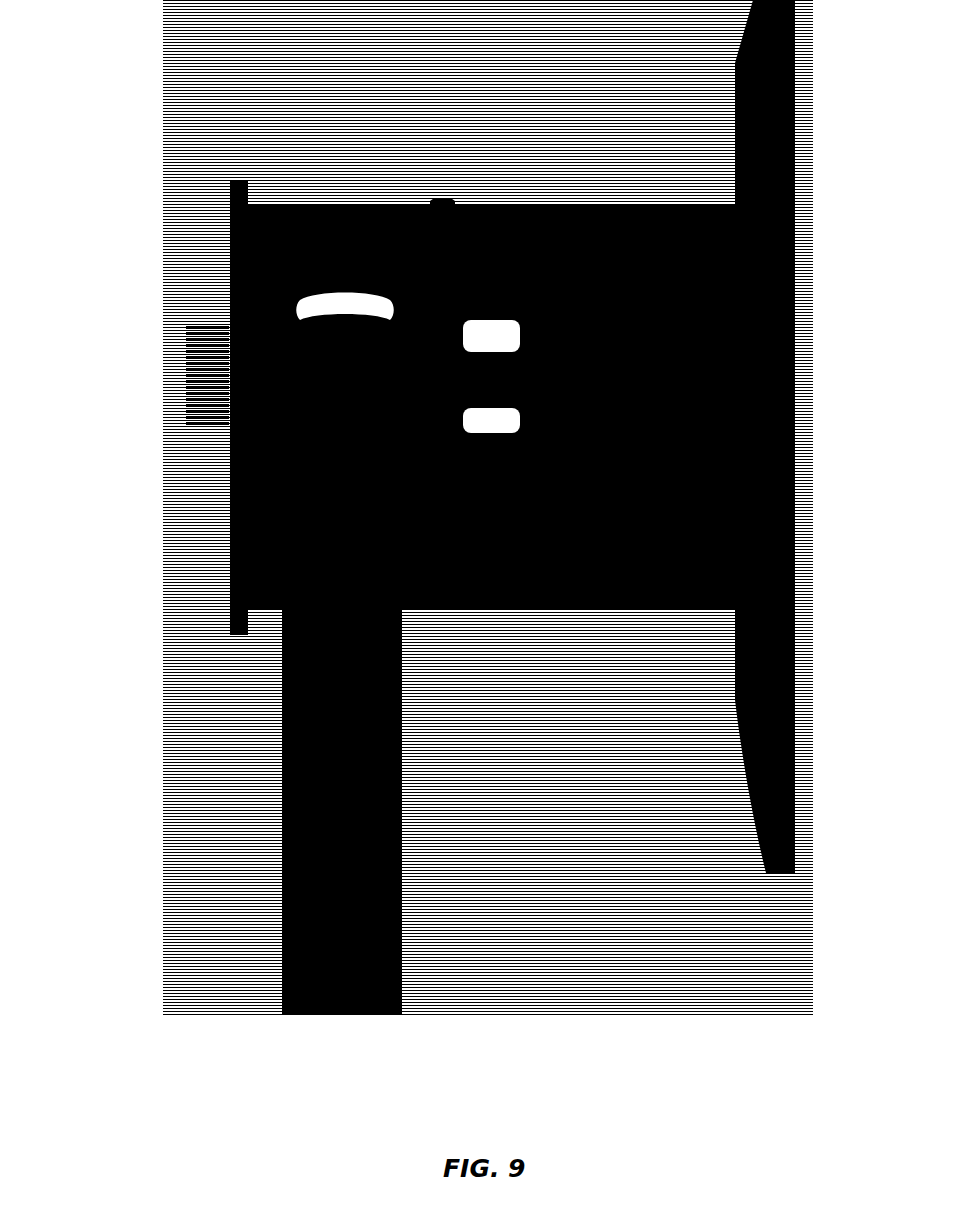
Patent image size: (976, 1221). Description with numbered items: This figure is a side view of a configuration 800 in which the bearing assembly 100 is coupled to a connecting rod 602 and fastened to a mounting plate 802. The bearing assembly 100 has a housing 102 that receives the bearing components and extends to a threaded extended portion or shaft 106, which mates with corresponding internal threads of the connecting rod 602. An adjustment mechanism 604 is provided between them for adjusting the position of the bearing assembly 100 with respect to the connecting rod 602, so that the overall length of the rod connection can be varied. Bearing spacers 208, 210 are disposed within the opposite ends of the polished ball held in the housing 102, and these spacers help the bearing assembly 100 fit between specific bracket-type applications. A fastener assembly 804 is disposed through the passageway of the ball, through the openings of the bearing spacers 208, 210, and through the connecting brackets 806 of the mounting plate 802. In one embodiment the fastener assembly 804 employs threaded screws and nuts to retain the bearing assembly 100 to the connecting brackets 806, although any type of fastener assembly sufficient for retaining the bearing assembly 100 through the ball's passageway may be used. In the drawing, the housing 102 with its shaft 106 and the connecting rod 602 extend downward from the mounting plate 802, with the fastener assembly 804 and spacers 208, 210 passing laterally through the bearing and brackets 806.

The configuration 800 is at (421, 103).
The mounting plate 802 is at (793, 163).
The fastener assembly 804 is at (610, 205).
The connecting brackets 806 is at (442, 200).
The housing 102 is at (272, 205).
The bearing assembly 100 is at (332, 205).
The bearing spacer 208 is at (387, 205).
The bearing spacer 210 is at (229, 300).
The extended portion or shaft 106 is at (229, 475).
The adjustment mechanism 604 is at (440, 612).
The connecting rod 602 is at (402, 838).